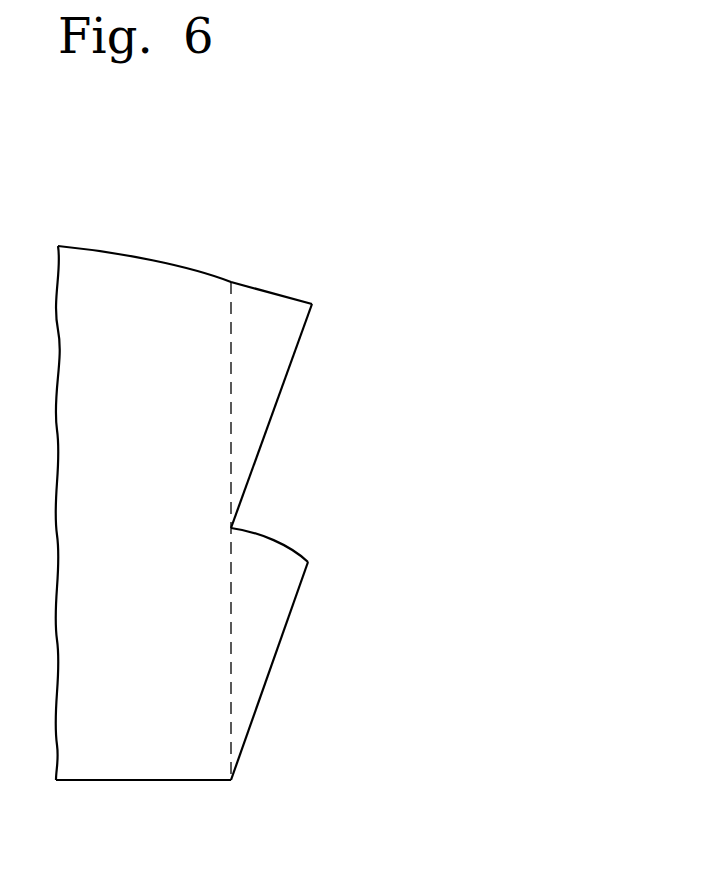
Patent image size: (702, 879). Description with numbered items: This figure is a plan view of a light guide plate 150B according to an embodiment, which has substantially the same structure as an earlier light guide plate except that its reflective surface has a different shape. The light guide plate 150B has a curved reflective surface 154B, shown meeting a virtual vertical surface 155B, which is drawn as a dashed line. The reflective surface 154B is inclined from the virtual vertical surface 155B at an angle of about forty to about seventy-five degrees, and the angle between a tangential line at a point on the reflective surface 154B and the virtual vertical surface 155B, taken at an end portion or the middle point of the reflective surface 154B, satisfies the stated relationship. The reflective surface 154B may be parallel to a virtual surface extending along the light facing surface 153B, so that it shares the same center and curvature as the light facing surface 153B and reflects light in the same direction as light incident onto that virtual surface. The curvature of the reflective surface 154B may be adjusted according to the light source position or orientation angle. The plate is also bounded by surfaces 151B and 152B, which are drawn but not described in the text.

The light guide plate 150B is at (303, 250).
The bottom surface 151B is at (143, 782).
The lower inclined side surface 152B is at (270, 668).
The light facing surface 153B is at (186, 267).
The reflective surface 154B is at (272, 535).
The virtual vertical surface 155B is at (232, 397).